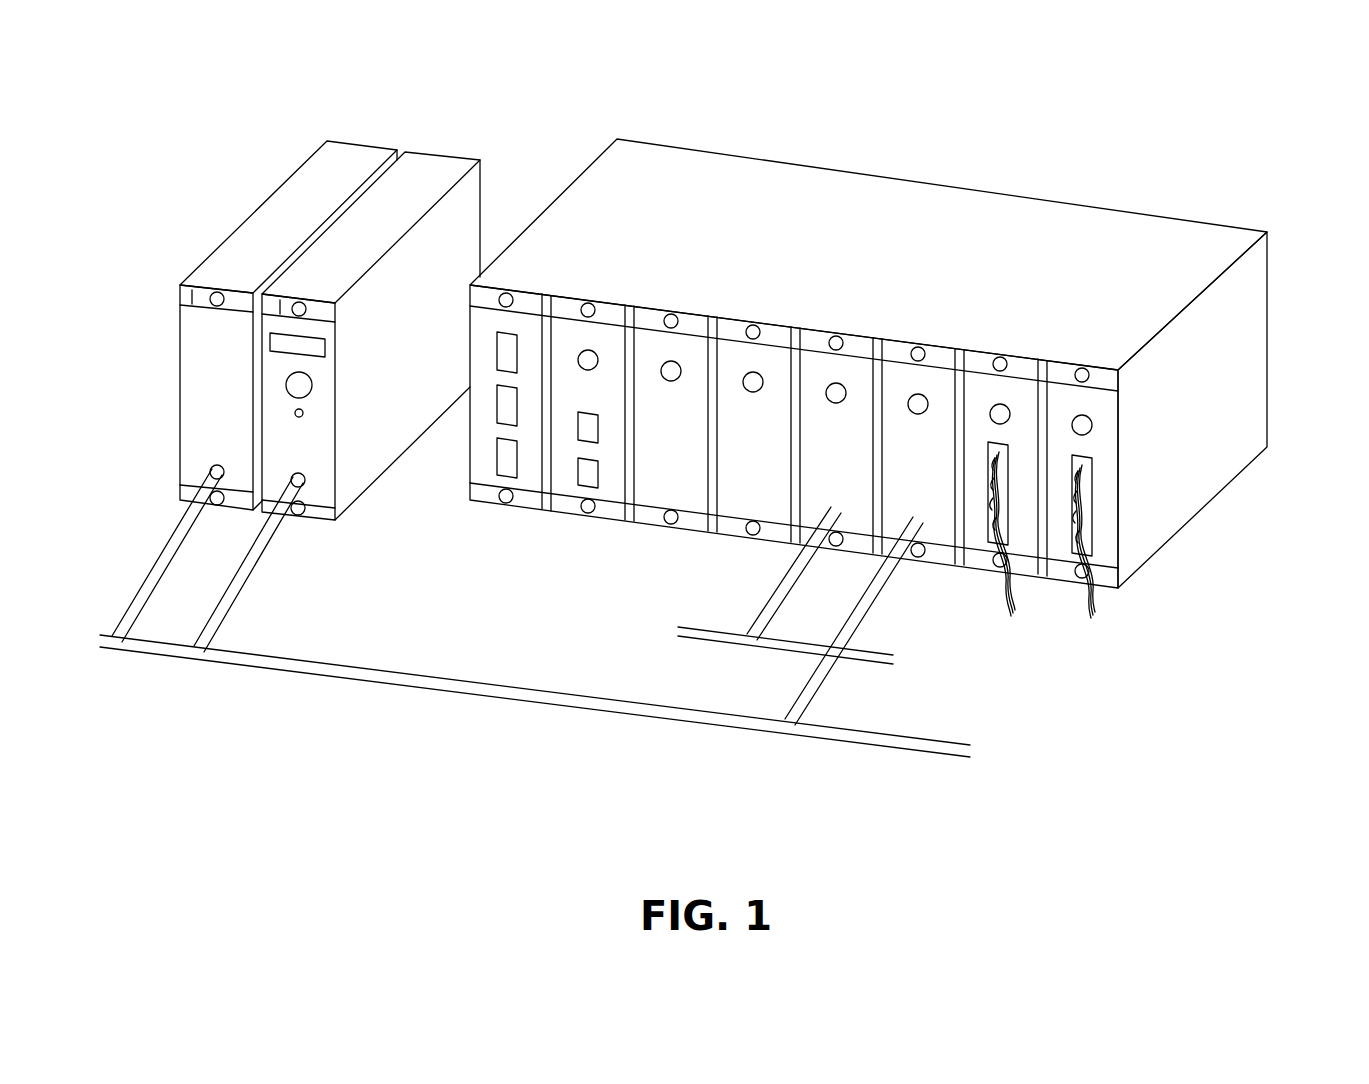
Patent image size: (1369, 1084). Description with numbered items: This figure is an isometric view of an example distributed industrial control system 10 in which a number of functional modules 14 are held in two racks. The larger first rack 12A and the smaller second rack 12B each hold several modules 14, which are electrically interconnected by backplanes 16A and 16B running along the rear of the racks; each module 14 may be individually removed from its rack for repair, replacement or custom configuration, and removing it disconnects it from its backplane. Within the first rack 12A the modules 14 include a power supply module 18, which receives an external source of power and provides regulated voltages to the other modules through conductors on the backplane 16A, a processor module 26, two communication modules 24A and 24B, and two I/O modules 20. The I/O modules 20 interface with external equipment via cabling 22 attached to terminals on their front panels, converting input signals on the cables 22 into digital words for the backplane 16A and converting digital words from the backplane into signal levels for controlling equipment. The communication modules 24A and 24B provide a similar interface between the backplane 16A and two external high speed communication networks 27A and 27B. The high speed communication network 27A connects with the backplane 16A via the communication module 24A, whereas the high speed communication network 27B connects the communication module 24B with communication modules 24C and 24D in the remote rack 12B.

The distributed industrial control system 10 is at (1128, 838).
The first rack 12A is at (1164, 528).
The second rack 12B is at (437, 430).
The functional modules 14 is at (670, 342).
The backplane 16A is at (1259, 137).
The backplane 16B is at (509, 80).
The power supply module 18 is at (487, 478).
The I/O modules 20 is at (1017, 422).
The cabling 22 is at (1017, 617).
The communication module 24A is at (845, 377).
The communication module 24B is at (935, 387).
The communication module 24C is at (202, 433).
The communication module 24D is at (315, 485).
The processor module 26 is at (570, 487).
The high speed communication network 27A is at (688, 627).
The high speed communication network 27B is at (353, 667).